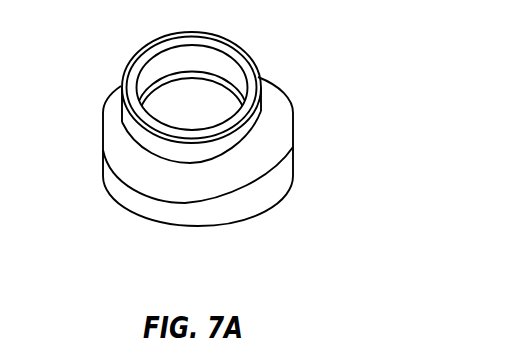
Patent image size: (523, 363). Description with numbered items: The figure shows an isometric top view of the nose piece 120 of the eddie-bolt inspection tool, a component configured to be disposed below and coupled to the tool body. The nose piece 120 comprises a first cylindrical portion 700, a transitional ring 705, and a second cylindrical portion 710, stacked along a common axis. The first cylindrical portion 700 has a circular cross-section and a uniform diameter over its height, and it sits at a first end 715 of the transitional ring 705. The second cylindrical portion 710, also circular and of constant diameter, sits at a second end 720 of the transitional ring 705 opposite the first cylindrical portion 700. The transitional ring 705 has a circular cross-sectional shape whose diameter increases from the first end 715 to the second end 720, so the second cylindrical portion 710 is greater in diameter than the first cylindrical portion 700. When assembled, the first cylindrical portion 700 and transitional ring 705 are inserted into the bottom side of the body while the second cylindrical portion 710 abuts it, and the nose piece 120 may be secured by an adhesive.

The nose piece 120 is at (207, 162).
The first cylindrical portion 700 is at (262, 86).
The transitional ring 705 is at (278, 141).
The second cylindrical portion 710 is at (267, 188).
The first end 715 is at (104, 113).
The second end 720 is at (128, 172).